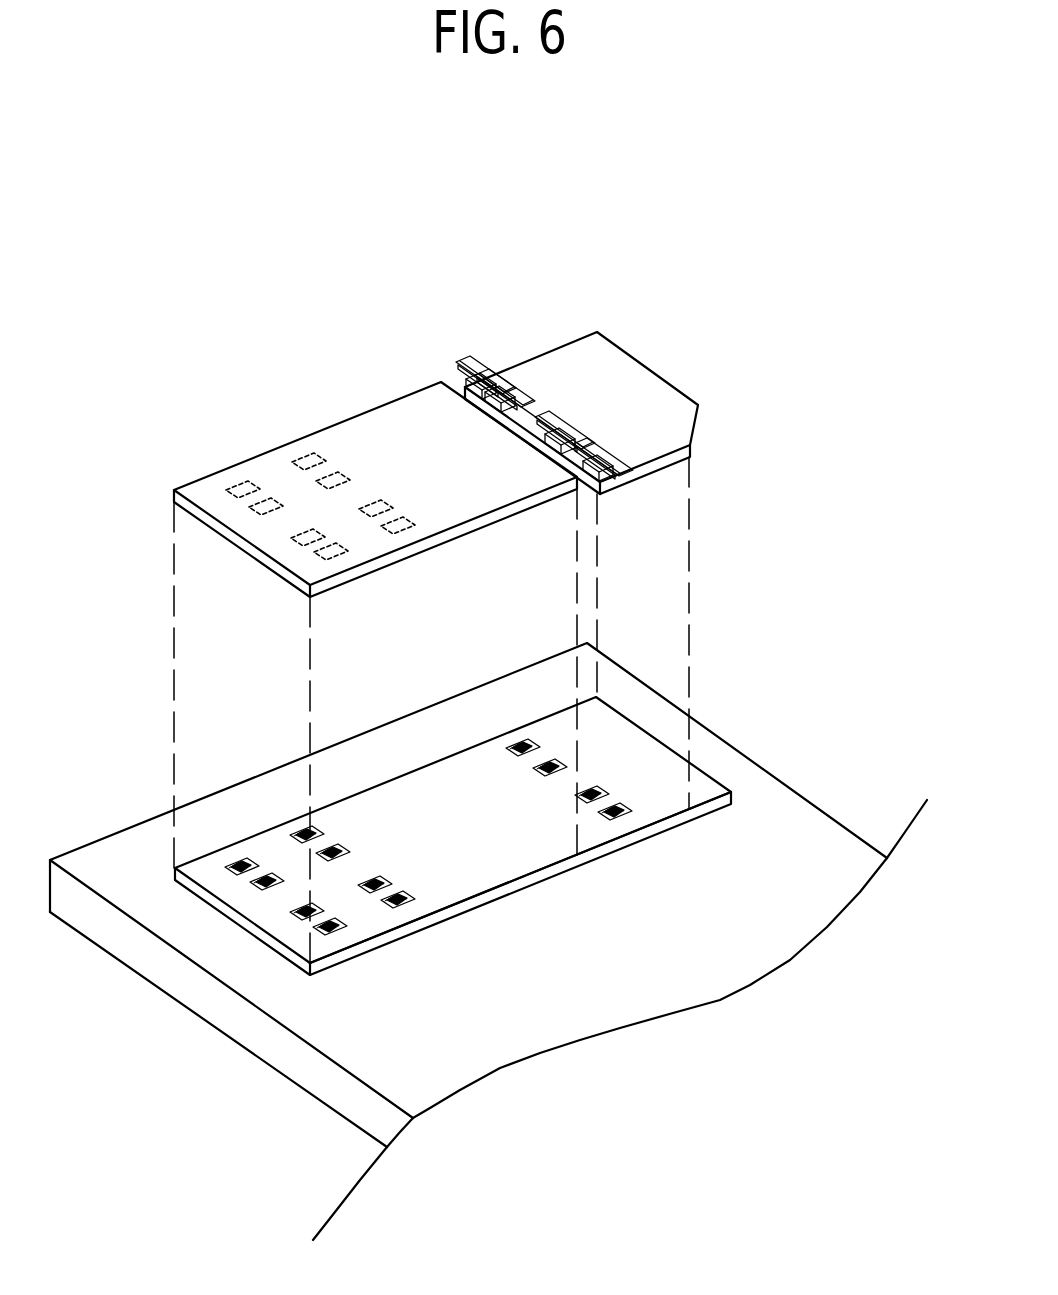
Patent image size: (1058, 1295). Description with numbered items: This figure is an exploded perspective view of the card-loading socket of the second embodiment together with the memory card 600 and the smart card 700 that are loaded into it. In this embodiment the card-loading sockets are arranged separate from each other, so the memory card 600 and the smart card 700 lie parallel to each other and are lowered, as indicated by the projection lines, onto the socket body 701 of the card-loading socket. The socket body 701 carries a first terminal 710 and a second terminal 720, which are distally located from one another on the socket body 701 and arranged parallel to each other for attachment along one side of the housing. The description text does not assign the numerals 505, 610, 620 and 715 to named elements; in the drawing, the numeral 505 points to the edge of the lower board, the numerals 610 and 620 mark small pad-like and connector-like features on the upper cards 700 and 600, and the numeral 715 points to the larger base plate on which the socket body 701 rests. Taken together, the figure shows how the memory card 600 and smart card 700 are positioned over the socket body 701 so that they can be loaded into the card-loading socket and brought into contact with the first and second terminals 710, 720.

The printed circuit board 505 is at (630, 848).
The memory card 600 is at (657, 362).
The contact pads 610 is at (313, 458).
The connector terminals 620 is at (502, 392).
The smart card 700 is at (388, 400).
The socket body 701 is at (493, 867).
The first terminal 710 is at (347, 923).
The second terminal 720 is at (523, 748).
The base plate 715 is at (237, 1027).